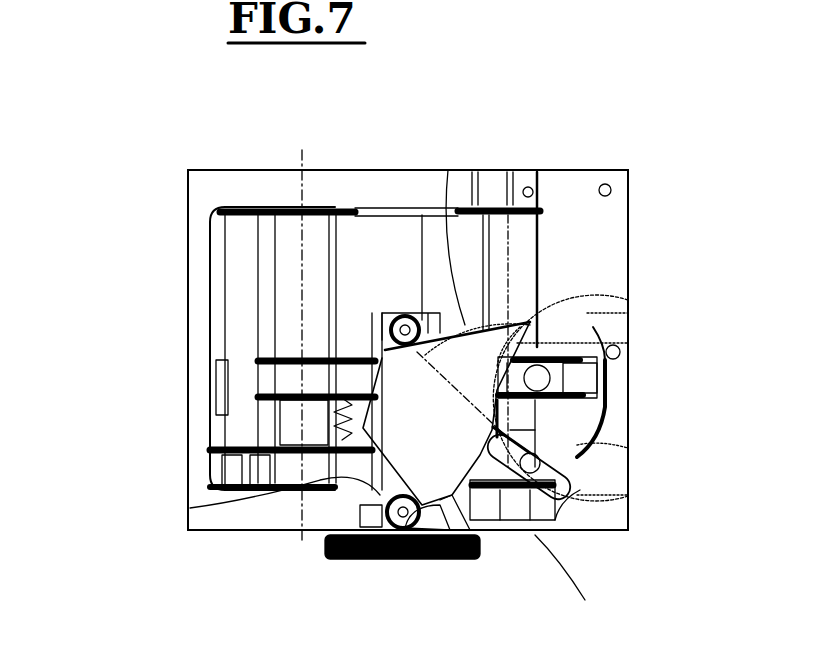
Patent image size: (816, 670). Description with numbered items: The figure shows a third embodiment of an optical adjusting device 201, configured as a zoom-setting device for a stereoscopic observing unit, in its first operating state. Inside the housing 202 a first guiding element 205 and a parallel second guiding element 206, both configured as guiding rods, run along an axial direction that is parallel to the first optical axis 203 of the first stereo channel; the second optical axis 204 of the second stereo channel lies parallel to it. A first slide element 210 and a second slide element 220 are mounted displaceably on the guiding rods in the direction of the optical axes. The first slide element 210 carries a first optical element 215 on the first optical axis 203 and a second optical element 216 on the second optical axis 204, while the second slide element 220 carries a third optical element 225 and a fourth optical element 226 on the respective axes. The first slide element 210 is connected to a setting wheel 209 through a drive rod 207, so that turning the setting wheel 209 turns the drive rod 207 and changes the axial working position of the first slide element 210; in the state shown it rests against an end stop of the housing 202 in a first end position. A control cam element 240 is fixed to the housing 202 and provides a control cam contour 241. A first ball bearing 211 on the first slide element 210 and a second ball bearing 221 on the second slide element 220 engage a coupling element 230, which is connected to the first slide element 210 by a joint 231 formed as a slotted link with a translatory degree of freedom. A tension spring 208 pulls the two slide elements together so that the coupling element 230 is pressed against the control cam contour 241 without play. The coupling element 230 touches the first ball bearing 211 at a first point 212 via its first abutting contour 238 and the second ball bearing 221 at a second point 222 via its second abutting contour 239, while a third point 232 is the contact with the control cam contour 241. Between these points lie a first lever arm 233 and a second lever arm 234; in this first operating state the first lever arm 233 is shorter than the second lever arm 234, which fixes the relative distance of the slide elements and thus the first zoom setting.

The optical device 201 is at (193, 95).
The housing 202 is at (188, 192).
The first optical axis 203 is at (302, 152).
The second optical axis 204 is at (514, 160).
The first guiding element 205 is at (213, 262).
The second guiding element 206 is at (398, 318).
The drive rod 207 is at (305, 545).
The tension spring 208 is at (335, 470).
The setting wheel 209 is at (357, 560).
The first slide element 210 is at (225, 462).
The first ball bearing 211 is at (485, 540).
The first point 212 is at (505, 540).
The first optical element 215 is at (258, 430).
The second optical element 216 is at (600, 440).
The second slide element 220 is at (225, 368).
The second ball bearing 221 is at (410, 318).
The second point 222 is at (600, 292).
The third optical element 225 is at (250, 402).
The fourth optical element 226 is at (600, 405).
The coupling element 230 is at (395, 318).
The joint 231 is at (540, 545).
The third point 232 is at (600, 500).
The first lever arm 233 is at (600, 525).
The second lever arm 234 is at (620, 340).
The first abutting contour 238 is at (330, 538).
The second abutting contour 239 is at (448, 170).
The control cam element 240 is at (612, 215).
The control cam contour 241 is at (600, 550).